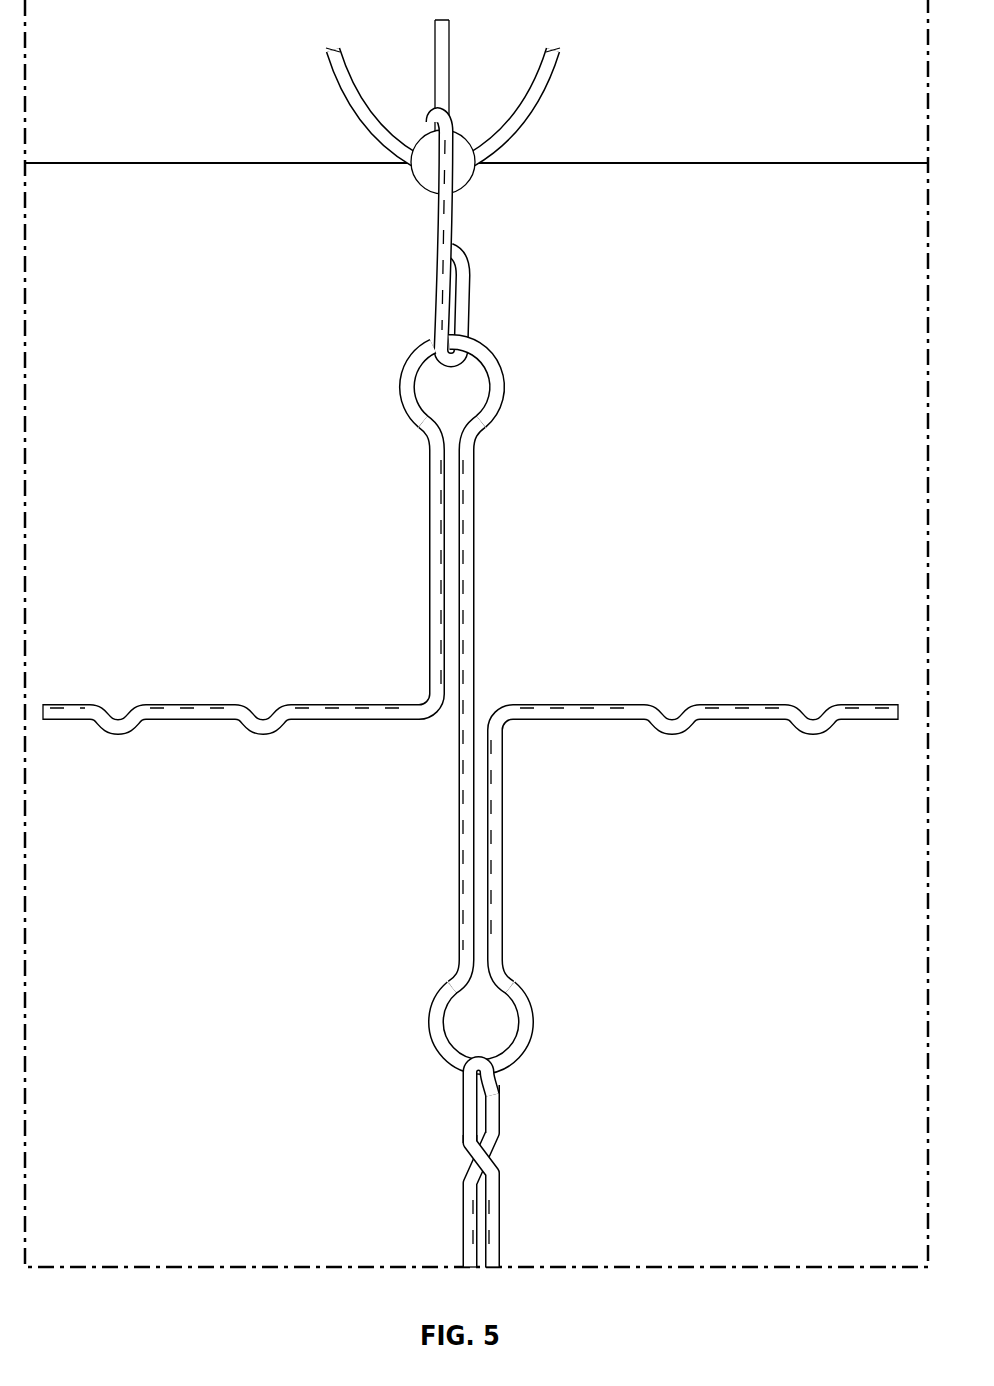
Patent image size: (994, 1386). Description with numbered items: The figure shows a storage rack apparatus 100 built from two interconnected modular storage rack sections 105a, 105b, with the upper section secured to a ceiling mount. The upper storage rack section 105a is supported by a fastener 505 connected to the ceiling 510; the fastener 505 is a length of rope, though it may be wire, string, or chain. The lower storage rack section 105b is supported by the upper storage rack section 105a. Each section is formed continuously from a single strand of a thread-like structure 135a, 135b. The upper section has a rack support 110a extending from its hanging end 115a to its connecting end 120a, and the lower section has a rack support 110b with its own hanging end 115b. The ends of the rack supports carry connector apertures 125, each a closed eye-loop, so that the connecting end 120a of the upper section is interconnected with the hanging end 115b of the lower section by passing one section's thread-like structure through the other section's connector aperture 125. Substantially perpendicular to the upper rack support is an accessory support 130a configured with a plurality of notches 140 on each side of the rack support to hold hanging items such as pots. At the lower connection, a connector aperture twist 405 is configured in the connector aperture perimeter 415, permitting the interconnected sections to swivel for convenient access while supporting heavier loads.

The apparatus 100 is at (470, 643).
The storage rack section 105a is at (477, 531).
The storage rack section 105b is at (603, 1190).
The rack support 110a is at (429, 615).
The rack support 110b is at (462, 1241).
The hanging end 115a is at (478, 437).
The hanging end 115b is at (500, 1227).
The connecting end 120a is at (453, 987).
The connector aperture 125 is at (462, 1124).
The accessory support 130a is at (342, 704).
The thread-like structure 135a is at (62, 704).
The thread-like structure 135b is at (500, 1262).
The notches 140 is at (810, 737).
The connector aperture twist 405 is at (500, 1114).
The connector aperture perimeter 415 is at (500, 1136).
The fastener 505 is at (455, 243).
The ceiling 510 is at (548, 88).